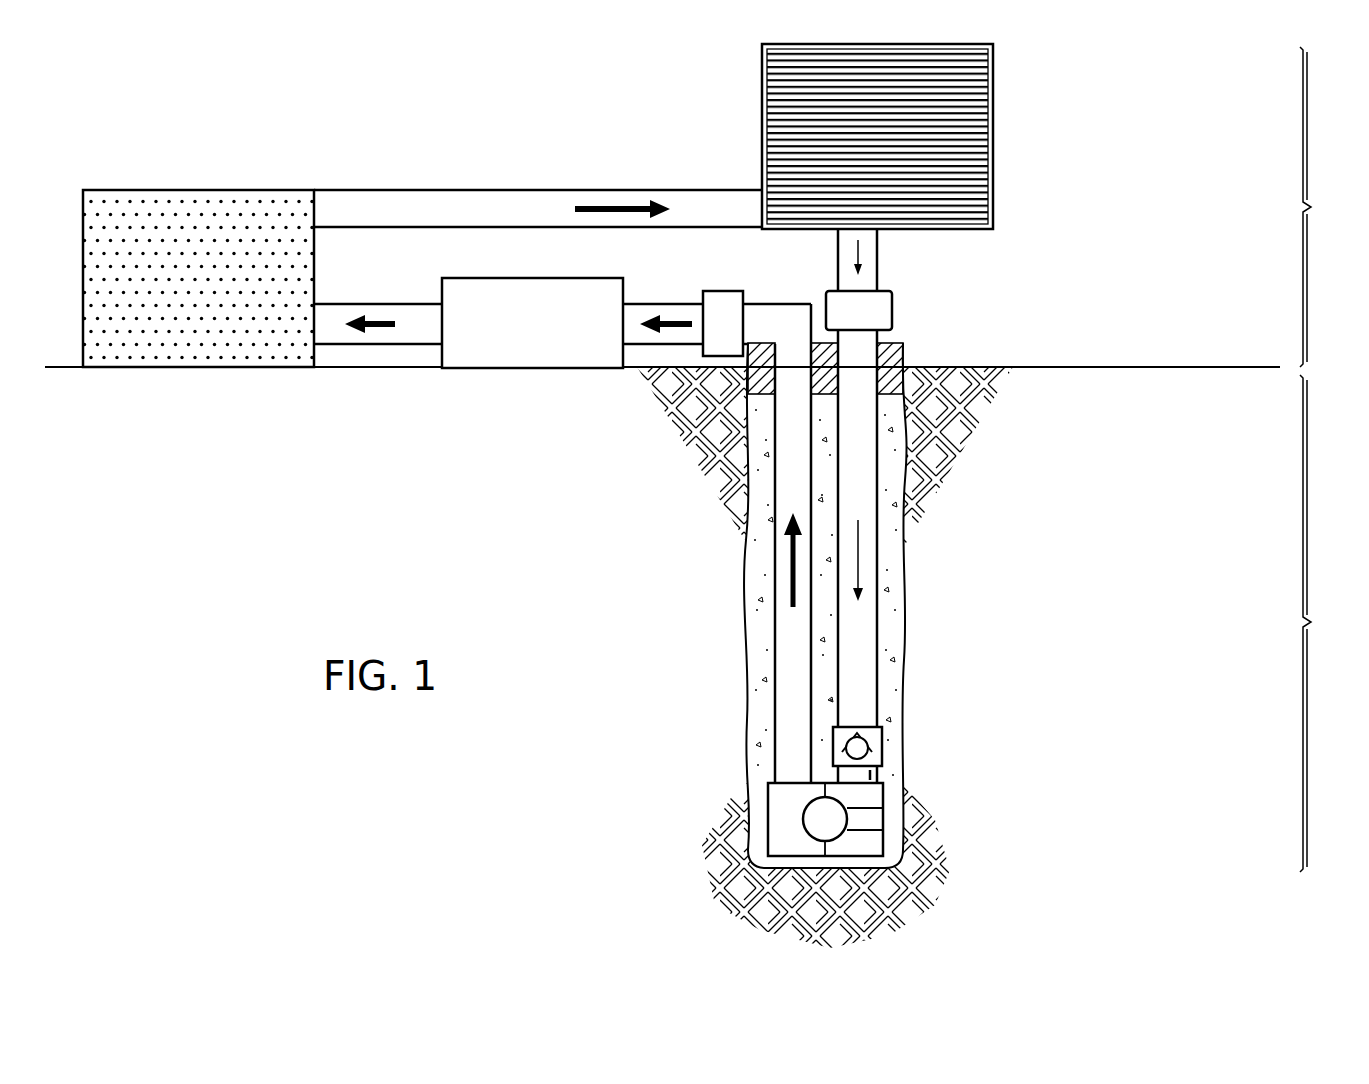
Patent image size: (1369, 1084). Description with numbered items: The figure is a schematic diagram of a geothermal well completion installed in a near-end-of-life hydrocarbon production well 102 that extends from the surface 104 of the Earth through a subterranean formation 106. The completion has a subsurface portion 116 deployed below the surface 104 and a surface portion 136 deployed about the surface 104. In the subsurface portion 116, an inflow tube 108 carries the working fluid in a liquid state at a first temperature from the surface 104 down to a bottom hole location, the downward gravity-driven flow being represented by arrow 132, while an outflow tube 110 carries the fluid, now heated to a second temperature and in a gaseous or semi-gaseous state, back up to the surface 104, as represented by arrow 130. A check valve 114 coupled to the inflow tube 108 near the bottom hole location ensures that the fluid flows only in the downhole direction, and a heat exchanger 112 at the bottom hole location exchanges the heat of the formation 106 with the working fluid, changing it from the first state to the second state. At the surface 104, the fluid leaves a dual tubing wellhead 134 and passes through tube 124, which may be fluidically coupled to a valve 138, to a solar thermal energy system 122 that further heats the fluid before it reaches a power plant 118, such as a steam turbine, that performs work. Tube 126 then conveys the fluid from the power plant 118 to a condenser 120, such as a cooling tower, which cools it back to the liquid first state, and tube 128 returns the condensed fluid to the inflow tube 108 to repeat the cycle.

The well 102 is at (895, 697).
The surface 104 is at (1213, 367).
The formation 106 is at (716, 746).
The inflow tube 108 is at (880, 655).
The outflow tube 110 is at (750, 655).
The heat exchanger 112 is at (862, 858).
The check valve 114 is at (885, 745).
The subsurface portion 116 is at (1329, 623).
The power plant 118 is at (200, 190).
The condenser 120 is at (996, 123).
The solar thermal energy system 122 is at (626, 290).
The tube 124 is at (381, 304).
The tube 126 is at (535, 190).
The tube 128 is at (880, 263).
The arrow 130 is at (793, 561).
The arrow 132 is at (857, 561).
The wellhead 134 is at (903, 349).
The surface portion 136 is at (1329, 207).
The valve 138 is at (726, 291).